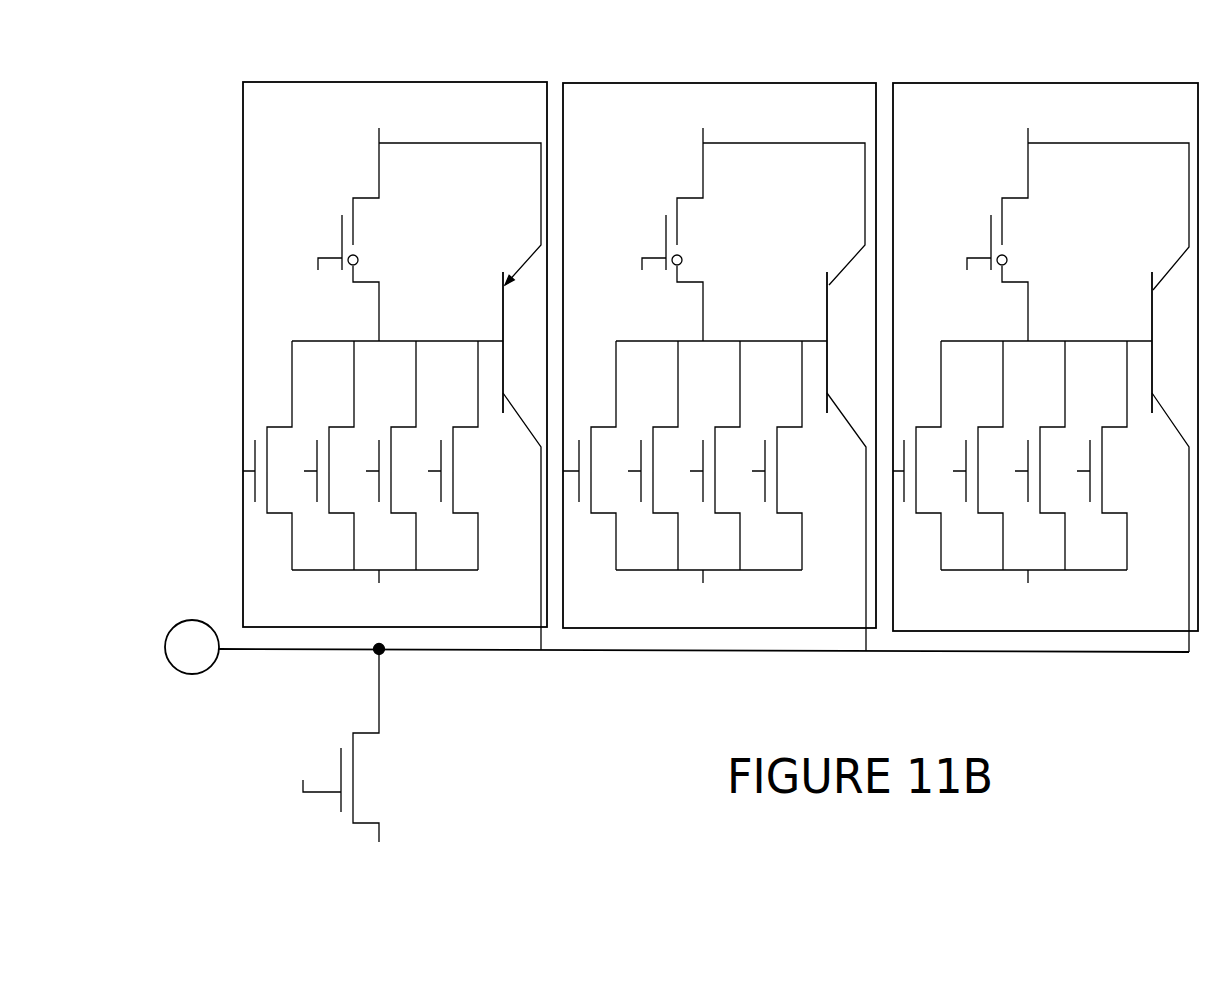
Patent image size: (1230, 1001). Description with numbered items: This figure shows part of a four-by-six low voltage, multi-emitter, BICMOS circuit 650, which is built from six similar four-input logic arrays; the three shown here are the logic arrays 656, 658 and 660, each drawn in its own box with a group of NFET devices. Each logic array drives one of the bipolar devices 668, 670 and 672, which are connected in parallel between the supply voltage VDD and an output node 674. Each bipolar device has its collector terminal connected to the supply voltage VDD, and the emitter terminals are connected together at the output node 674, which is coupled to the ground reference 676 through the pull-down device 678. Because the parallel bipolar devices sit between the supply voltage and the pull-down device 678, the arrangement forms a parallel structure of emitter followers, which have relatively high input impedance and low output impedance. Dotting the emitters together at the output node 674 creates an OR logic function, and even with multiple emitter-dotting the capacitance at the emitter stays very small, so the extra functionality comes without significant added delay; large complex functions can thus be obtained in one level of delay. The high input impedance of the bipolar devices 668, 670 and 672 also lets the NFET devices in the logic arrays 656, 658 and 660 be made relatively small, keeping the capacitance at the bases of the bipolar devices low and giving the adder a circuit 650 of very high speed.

The low voltage, multi-emitter, BICMOS circuit 650 is at (646, 60).
The logic array 656 is at (412, 82).
The logic array 658 is at (735, 83).
The logic array 660 is at (1054, 83).
The bipolar device 668 is at (500, 305).
The bipolar device 670 is at (808, 434).
The bipolar device 672 is at (1126, 434).
The output node 674 is at (383, 652).
The ground reference 676 is at (405, 856).
The pull-down device 678 is at (365, 733).